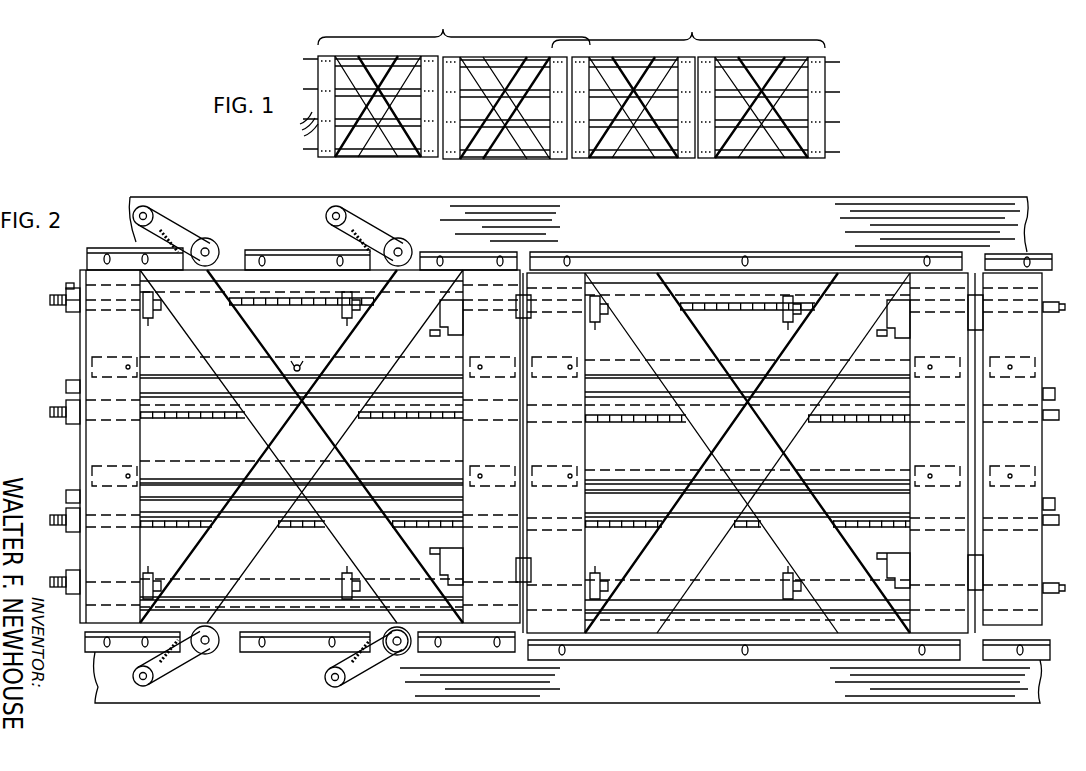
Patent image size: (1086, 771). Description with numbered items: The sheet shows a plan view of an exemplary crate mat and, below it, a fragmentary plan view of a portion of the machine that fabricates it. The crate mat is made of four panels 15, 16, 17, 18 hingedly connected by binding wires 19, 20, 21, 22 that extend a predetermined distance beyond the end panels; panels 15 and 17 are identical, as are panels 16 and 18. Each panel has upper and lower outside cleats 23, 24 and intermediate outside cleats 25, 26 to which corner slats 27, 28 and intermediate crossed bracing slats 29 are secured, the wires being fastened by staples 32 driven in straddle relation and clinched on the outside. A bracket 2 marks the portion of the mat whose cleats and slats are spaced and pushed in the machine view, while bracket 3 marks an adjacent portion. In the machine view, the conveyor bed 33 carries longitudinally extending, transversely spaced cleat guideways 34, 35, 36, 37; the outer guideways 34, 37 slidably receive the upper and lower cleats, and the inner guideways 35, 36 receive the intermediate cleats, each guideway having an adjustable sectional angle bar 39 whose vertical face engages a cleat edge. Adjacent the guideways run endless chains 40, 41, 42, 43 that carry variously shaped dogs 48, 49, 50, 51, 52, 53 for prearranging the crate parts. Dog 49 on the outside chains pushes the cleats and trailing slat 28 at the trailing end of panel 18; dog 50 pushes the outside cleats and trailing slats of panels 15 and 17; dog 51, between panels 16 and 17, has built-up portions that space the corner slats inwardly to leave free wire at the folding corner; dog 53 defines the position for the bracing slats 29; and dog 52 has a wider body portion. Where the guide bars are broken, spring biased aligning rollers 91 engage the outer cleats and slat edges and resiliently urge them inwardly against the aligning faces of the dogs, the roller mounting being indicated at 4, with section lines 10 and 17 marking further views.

In FIG. 1, the bracket 2 is at (454, 23).
In FIG. 1, the bracket 3 is at (601, 4).
In FIG. 2, the latch roller 4 is at (411, 653).
In FIG. 2, the section line 10- 10 is at (64, 604).
In FIG. 1, the panel 15 is at (750, 163).
In FIG. 1, the panel 16 is at (626, 160).
In FIG. 2, the panel 16 is at (1024, 449).
In FIG. 1, the panel 17 is at (505, 162).
In FIG. 2, the panel 17 is at (721, 663).
In FIG. 1, the panel 18 is at (375, 162).
In FIG. 2, the panel 18 is at (242, 653).
In FIG. 1, the binding wire 19 is at (495, 60).
In FIG. 2, the binding wire 19 is at (780, 283).
In FIG. 1, the binding wire 20 is at (516, 90).
In FIG. 2, the binding wire 20 is at (850, 390).
In FIG. 1, the binding wire 21 is at (520, 120).
In FIG. 2, the binding wire 21 is at (828, 505).
In FIG. 1, the binding wire 22 is at (495, 155).
In FIG. 2, the binding wire 22 is at (737, 612).
In FIG. 1, the upper outside cleat 23 is at (380, 59).
In FIG. 2, the upper outside cleat 23 is at (298, 272).
In FIG. 1, the lower outside cleat 24 is at (368, 157).
In FIG. 2, the lower outside cleat 24 is at (316, 622).
In FIG. 1, the intermediate outside cleat 25 is at (405, 90).
In FIG. 2, the intermediate outside cleat 25 is at (412, 390).
In FIG. 1, the intermediate outside cleat 26 is at (395, 125).
In FIG. 2, the intermediate outside cleat 26 is at (405, 485).
In FIG. 1, the corner slat 27 is at (430, 62).
In FIG. 2, the corner slat 27 is at (520, 448).
In FIG. 1, the corner slat 28 is at (318, 68).
In FIG. 2, the corner slat 28 is at (130, 442).
In FIG. 1, the intermediate crossed bracing slat 29 is at (368, 115).
In FIG. 2, the intermediate crossed bracing slat 29 is at (340, 538).
In FIG. 1, the staple 32 is at (297, 125).
In FIG. 2, the conveyor bed 33 is at (900, 245).
In FIG. 2, the cleat guideway 34 is at (278, 245).
In FIG. 2, the cleat guideway 35 is at (298, 364).
In FIG. 2, the cleat guideway 36 is at (221, 472).
In FIG. 2, the cleat guideway 37 is at (286, 659).
In FIG. 2, the angle bar 39 is at (635, 252).
In FIG. 2, the endless chain 40 is at (55, 305).
In FIG. 2, the endless chain 41 is at (62, 402).
In FIG. 2, the endless chain 42 is at (56, 513).
In FIG. 2, the endless chain 43 is at (52, 578).
In FIG. 2, the dog 48 is at (84, 422).
In FIG. 2, the dog 49 is at (68, 284).
In FIG. 2, the dog 50 is at (528, 310).
In FIG. 2, the dog 51 is at (985, 315).
In FIG. 2, the dog 52 is at (440, 310).
In FIG. 2, the dog 53 is at (345, 320).
In FIG. 2, the aligning roller 91 is at (207, 243).